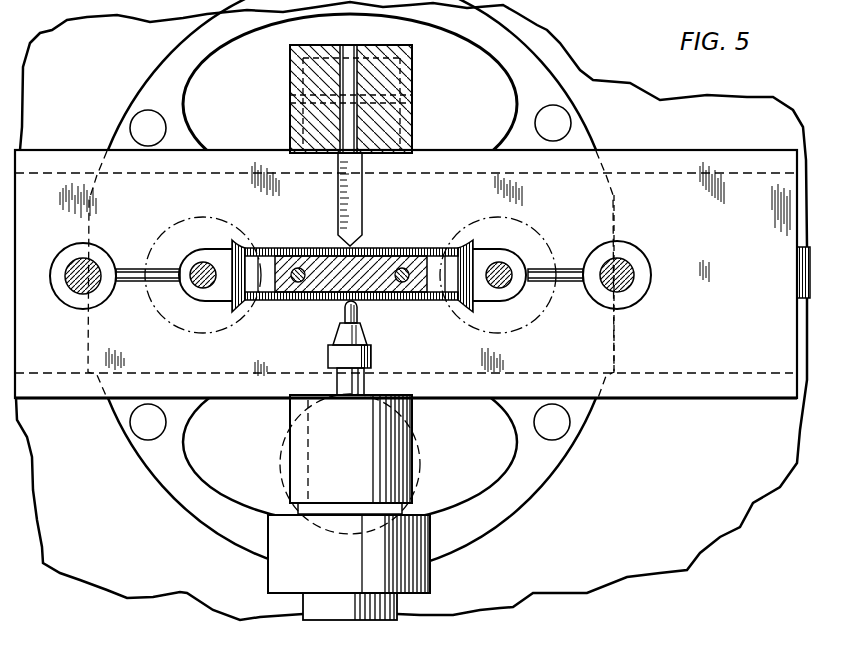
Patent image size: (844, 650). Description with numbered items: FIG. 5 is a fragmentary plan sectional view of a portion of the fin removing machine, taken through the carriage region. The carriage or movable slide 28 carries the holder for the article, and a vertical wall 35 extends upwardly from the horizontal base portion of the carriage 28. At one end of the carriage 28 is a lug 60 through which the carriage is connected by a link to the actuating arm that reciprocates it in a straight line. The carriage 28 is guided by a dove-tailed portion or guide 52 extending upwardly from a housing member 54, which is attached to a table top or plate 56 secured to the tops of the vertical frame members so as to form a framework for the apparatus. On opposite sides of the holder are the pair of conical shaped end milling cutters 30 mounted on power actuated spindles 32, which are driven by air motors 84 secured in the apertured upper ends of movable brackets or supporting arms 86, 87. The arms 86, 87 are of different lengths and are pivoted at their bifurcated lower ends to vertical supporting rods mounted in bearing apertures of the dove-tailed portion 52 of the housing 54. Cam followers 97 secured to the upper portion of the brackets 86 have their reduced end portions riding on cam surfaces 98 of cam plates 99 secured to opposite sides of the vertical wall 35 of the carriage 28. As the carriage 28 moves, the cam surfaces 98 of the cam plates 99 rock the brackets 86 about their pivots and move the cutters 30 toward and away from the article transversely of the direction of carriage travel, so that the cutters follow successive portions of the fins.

The carriage 28 is at (767, 399).
The end milling cutter 30 is at (357, 314).
The spindle 32 is at (364, 378).
The vertical wall 35 is at (365, 270).
The dove-tailed guide 52 is at (615, 192).
The housing member 54 is at (527, 505).
The table top plate 56 is at (755, 510).
The lug 60 is at (797, 262).
The air motor 84 is at (268, 593).
The supporting arm 86 is at (290, 449).
The supporting arm 87 is at (290, 91).
The cam follower 97 is at (363, 182).
The cam surface 98 is at (240, 248).
The cam plate 99 is at (299, 249).